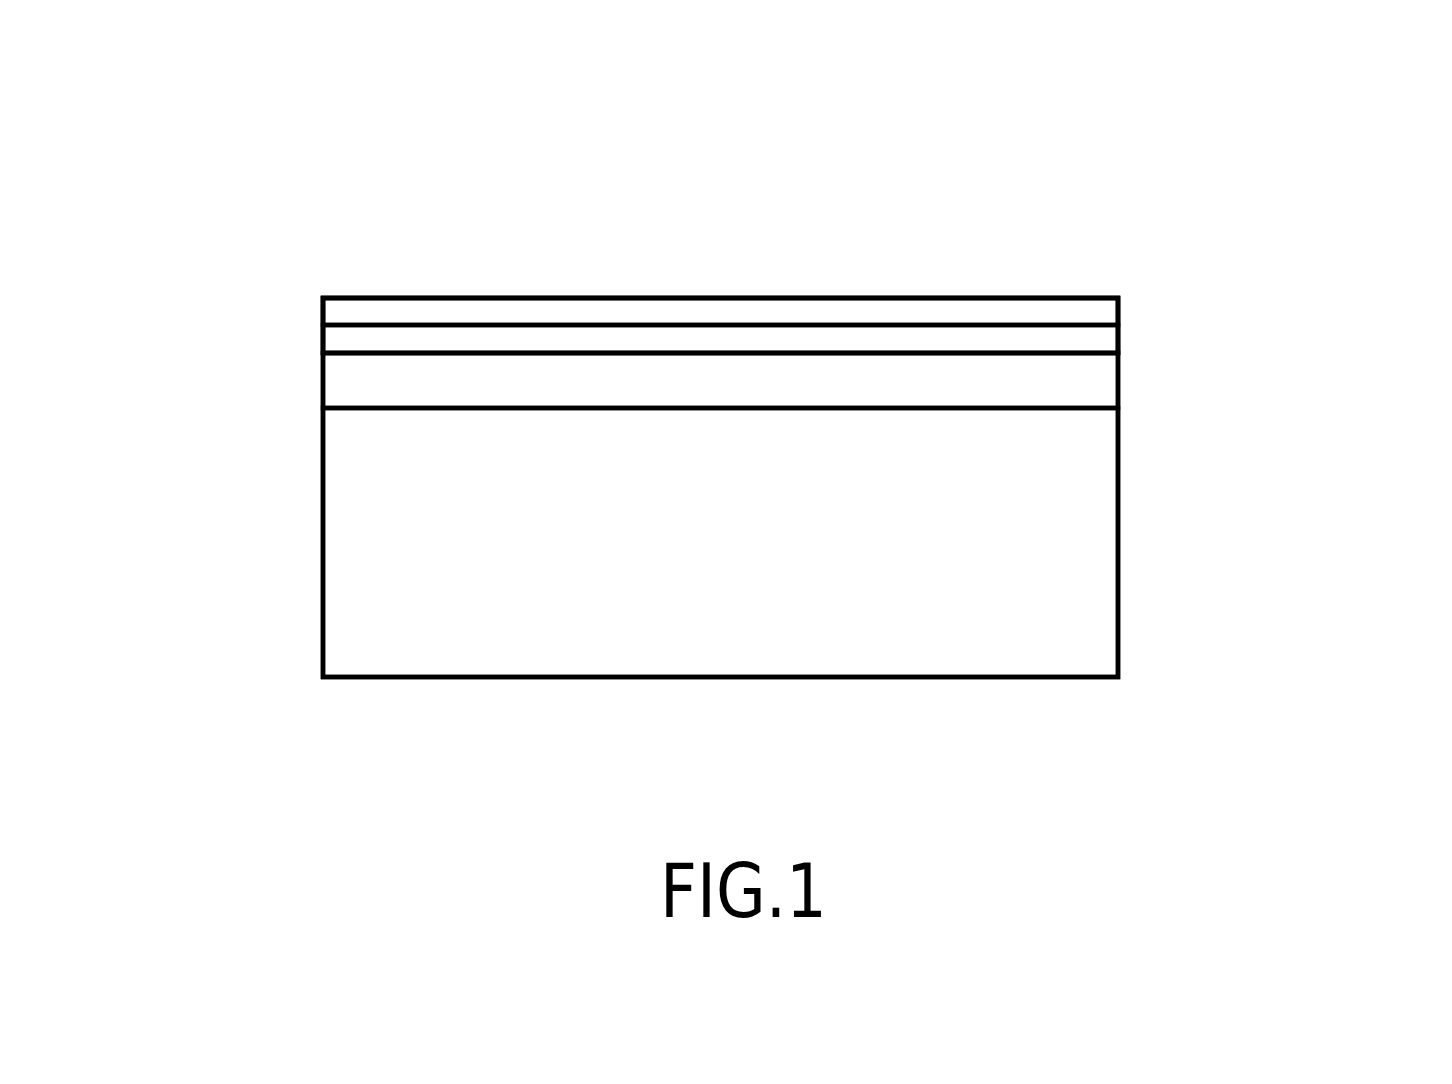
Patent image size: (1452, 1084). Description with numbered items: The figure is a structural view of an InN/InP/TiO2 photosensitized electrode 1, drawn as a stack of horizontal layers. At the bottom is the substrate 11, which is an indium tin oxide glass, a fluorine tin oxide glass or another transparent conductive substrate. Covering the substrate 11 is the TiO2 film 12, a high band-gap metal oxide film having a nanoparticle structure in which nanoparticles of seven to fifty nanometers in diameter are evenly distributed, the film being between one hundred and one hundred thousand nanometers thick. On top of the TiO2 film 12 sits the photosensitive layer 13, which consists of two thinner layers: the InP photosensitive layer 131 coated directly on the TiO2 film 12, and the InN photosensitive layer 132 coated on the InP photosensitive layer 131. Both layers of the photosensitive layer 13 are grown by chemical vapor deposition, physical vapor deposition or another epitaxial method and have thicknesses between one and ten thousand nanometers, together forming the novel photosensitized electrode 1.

The photosensitized electrode 1 is at (340, 262).
The substrate 11 is at (1120, 540).
The TiO2 film 12 is at (1120, 382).
The photosensitive layer 13 is at (296, 339).
The InP photosensitive layer 131 is at (1120, 340).
The InN photosensitive layer 132 is at (1118, 303).